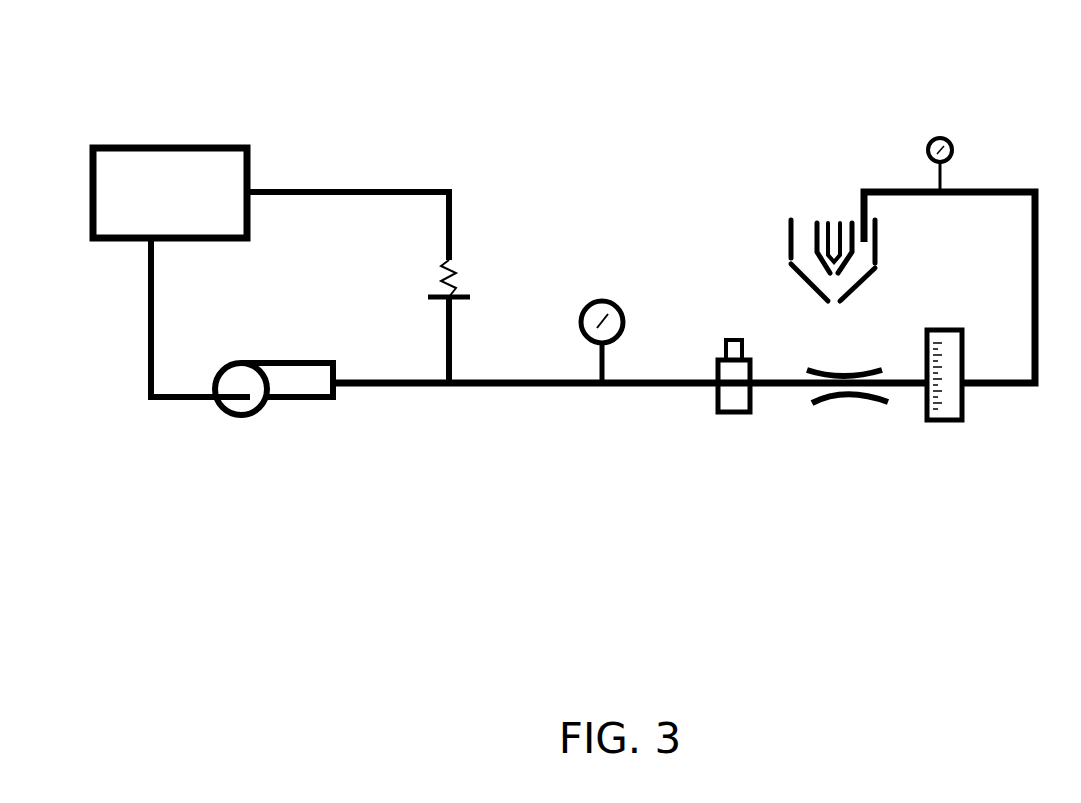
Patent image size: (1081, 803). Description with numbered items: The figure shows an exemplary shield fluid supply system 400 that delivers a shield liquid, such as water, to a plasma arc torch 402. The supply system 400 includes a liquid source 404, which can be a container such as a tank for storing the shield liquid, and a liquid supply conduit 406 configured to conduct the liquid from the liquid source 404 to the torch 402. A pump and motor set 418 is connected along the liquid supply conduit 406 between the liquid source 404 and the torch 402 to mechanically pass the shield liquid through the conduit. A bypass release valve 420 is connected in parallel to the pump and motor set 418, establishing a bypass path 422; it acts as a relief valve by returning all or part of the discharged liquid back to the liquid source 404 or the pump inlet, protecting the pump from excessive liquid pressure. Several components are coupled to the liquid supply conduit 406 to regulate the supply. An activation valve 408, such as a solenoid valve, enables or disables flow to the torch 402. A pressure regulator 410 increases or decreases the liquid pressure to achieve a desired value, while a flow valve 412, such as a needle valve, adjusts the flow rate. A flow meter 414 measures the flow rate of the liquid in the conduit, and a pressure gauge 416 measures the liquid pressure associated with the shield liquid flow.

The supply system 400 is at (539, 72).
The plasma arc torch 402 is at (766, 241).
The liquid source 404 is at (170, 193).
The liquid supply conduit 406 is at (510, 378).
The activation valve 408 is at (738, 337).
The pressure regulator 410 is at (600, 302).
The flow valve 412 is at (852, 400).
The flow meter 414 is at (947, 422).
The pressure gauge 416 is at (935, 140).
The pump and motor set 418 is at (238, 418).
The bypass release valve 420 is at (465, 268).
The bypass path 422 is at (350, 187).